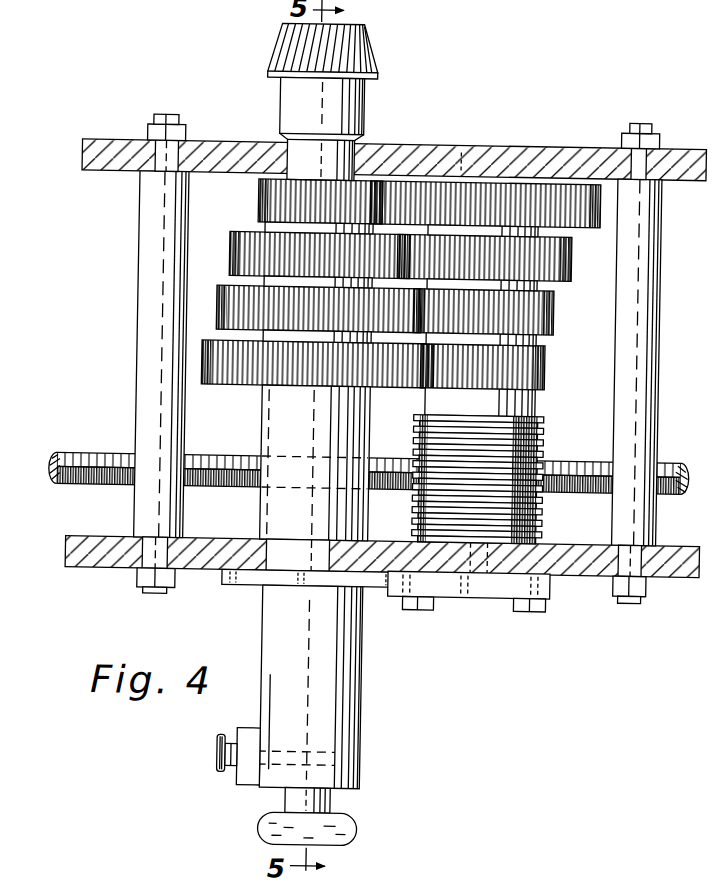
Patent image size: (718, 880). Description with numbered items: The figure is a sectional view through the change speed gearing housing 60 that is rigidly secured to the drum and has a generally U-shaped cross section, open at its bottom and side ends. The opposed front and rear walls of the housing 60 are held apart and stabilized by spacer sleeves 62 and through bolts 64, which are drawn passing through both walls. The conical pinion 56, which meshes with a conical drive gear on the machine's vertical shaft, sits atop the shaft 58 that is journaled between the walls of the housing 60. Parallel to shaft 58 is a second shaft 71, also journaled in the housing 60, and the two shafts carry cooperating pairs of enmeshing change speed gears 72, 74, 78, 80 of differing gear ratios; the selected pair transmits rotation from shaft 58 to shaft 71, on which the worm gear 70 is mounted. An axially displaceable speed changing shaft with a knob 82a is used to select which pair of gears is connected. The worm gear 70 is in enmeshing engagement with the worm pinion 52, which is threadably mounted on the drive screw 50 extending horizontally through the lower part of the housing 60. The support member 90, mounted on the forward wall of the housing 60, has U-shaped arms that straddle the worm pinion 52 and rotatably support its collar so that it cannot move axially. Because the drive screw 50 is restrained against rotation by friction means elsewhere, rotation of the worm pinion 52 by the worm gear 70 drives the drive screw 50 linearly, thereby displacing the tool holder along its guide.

The drive screw 50 is at (213, 470).
The worm pinion 52 is at (461, 590).
The conical pinion 56 is at (361, 35).
The shaft 58 is at (284, 149).
The change speed gearing housing 60 is at (495, 141).
The spacer sleeve 62 is at (143, 238).
The through bolt 64 is at (165, 116).
The worm gear 70 is at (541, 441).
The shaft 71 is at (456, 168).
The change speed gear 72 is at (540, 176).
The change speed gear 74 is at (569, 256).
The change speed gear 78 is at (550, 311).
The change speed gear 80 is at (547, 370).
The handle 82a is at (359, 819).
The support member 90 is at (553, 573).